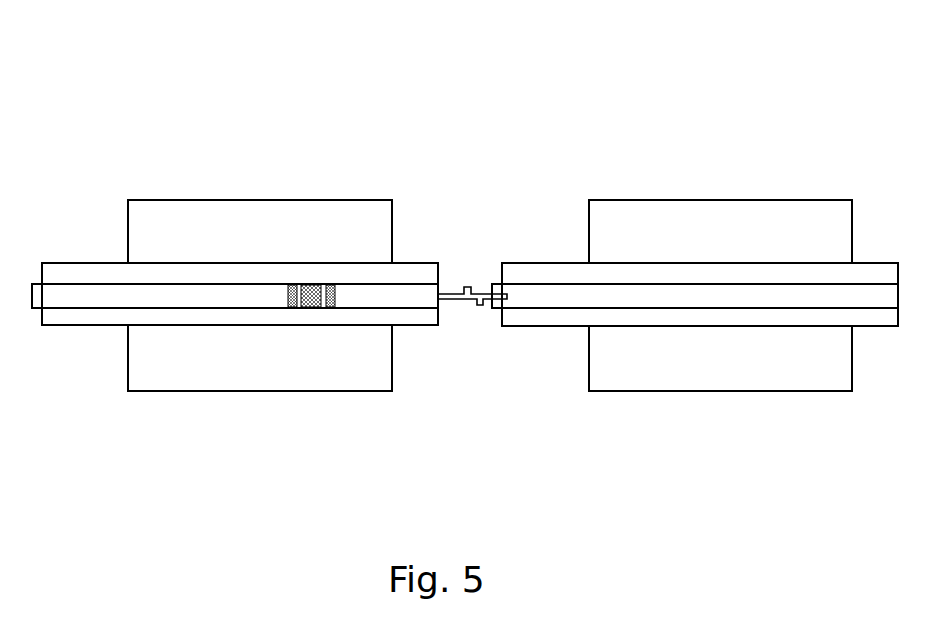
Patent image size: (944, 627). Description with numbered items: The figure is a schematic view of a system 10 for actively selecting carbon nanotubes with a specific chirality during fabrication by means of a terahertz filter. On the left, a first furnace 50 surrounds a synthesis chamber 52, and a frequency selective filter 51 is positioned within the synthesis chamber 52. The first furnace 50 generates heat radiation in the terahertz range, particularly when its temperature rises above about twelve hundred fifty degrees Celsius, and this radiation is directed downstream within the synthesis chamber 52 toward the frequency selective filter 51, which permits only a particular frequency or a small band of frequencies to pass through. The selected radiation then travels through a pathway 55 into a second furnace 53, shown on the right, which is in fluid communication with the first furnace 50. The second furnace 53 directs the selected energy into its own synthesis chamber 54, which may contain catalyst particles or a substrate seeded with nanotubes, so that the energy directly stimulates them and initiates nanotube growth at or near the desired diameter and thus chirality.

The system 10 is at (398, 94).
The first furnace 50 is at (98, 263).
The frequency selective filter 51 is at (313, 284).
The synthesis chamber 52 is at (188, 309).
The second furnace 53 is at (532, 326).
The synthesis chamber 54 is at (722, 284).
The pathway 55 is at (450, 292).